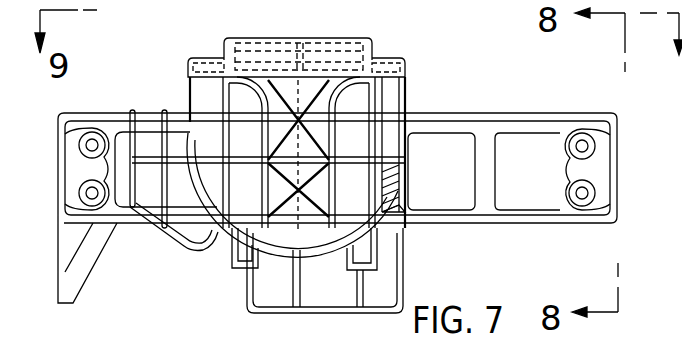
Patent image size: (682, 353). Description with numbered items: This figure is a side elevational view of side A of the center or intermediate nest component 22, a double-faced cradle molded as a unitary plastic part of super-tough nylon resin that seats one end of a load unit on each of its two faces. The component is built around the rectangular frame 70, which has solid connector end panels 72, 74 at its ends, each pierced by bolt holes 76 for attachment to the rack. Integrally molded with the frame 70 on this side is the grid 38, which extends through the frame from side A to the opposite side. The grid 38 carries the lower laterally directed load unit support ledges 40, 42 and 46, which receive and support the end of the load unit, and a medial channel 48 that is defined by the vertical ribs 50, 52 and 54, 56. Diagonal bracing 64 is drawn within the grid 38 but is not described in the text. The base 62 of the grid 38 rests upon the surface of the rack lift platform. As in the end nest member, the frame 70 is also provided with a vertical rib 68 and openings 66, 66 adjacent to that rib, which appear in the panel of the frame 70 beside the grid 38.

The center nest component 22 is at (420, 114).
The grid 38 is at (410, 96).
The load unit support ledge 40 is at (388, 206).
The load unit support ledge 42 is at (223, 237).
The load unit support ledge 46 is at (153, 223).
The medial channel 48 is at (262, 123).
The vertical rib 50 is at (333, 172).
The vertical rib 52 is at (262, 180).
The vertical rib 54 is at (388, 78).
The vertical rib 56 is at (210, 77).
The base of the grid 62 is at (295, 310).
The diagonal braces 64 is at (318, 132).
The opening 66 is at (497, 213).
The vertical rib 68 is at (500, 153).
The rectangular frame 70 is at (520, 113).
The connector end panel 72 is at (597, 171).
The connector end panel 74 is at (72, 163).
The bolt hole 76 is at (88, 145).